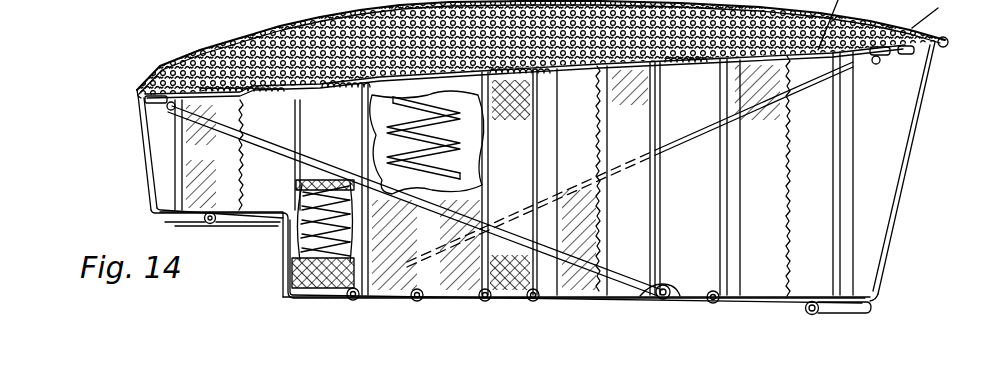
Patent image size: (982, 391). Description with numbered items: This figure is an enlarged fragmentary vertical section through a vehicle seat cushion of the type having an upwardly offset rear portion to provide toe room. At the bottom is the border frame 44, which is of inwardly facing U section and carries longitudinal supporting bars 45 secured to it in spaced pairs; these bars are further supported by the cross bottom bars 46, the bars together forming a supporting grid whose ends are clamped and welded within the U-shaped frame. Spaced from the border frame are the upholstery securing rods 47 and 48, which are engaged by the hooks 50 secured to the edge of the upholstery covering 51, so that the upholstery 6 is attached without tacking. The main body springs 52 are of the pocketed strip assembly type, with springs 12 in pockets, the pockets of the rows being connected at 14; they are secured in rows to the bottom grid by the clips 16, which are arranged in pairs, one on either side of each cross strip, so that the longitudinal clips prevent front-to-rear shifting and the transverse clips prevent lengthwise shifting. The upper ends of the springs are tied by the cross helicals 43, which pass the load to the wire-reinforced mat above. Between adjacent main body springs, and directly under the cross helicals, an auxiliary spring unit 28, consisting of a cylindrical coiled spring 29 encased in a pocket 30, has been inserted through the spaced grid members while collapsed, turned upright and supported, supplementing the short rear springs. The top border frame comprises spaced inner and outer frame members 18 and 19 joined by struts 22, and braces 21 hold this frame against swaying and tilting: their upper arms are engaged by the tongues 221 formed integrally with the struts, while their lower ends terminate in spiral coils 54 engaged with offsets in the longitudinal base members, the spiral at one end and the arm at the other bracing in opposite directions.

The upholstery 6 is at (920, 110).
The springs 12 is at (460, 150).
The connection of pockets 14 is at (790, 242).
The clips 16 is at (713, 277).
The inner frame member 18 is at (862, 27).
The outer frame member 19 is at (912, 28).
The braces 21 is at (496, 216).
The struts 22 is at (142, 102).
The tongues 221 is at (166, 114).
The auxiliary spring unit 28 is at (284, 293).
The cylindrical coiled spring 29 is at (286, 258).
The pocket 30 is at (284, 276).
The cross helicals 43 is at (683, 76).
The border frame 44 is at (868, 290).
The longitudinal supporting bars 45 is at (482, 303).
The cross bottom bars 46 is at (628, 302).
The upholstery securing rod 47 is at (808, 313).
The upholstery securing rod 48 is at (280, 230).
The hooks 50 is at (207, 222).
The upholstery covering 51 is at (147, 170).
The main body springs 52 is at (650, 238).
The spiral coils 54 is at (670, 292).